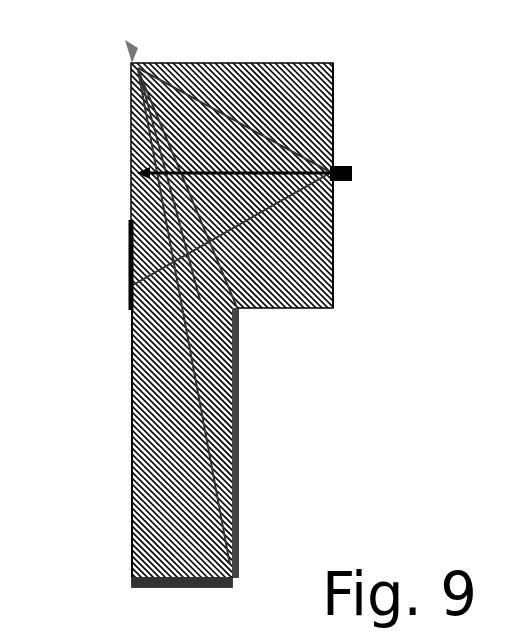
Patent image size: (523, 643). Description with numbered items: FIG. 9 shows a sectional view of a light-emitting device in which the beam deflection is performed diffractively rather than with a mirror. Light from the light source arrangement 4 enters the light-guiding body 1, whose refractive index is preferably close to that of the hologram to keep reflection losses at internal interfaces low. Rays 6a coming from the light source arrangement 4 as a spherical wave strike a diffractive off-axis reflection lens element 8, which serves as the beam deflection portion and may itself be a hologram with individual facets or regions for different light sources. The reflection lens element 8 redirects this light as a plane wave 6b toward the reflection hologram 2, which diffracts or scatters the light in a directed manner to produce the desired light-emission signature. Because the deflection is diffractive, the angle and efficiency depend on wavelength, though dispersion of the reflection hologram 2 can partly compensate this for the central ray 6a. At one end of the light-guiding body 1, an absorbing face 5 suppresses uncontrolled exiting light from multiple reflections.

The light-guiding body 1 is at (122, 320).
The reflection hologram 2 is at (246, 466).
The light source arrangement 4 is at (352, 152).
The light-absorbing face 5 is at (205, 594).
The rays from the light source 6a is at (336, 108).
The plane wave 6b is at (133, 395).
The diffractive off-axis reflection lens element 8 is at (128, 42).